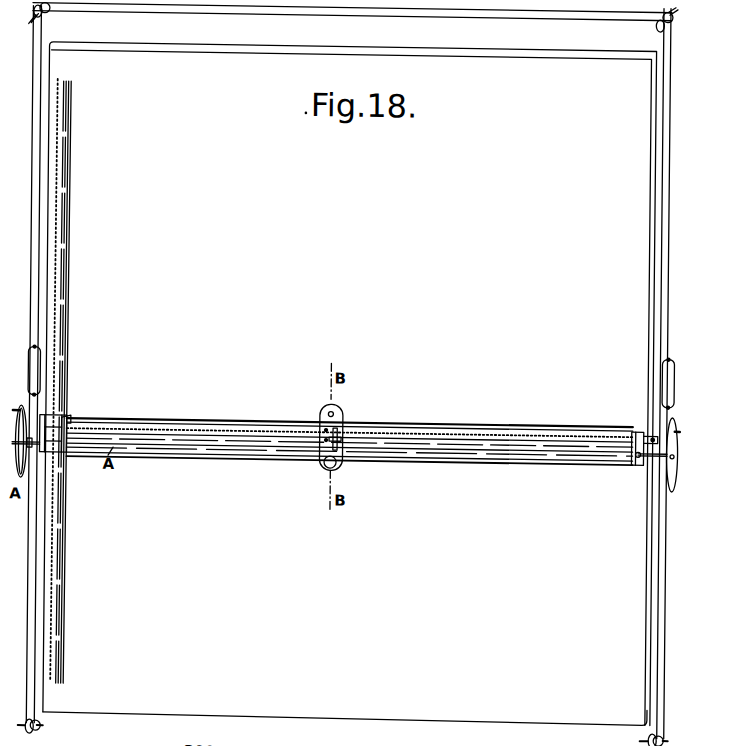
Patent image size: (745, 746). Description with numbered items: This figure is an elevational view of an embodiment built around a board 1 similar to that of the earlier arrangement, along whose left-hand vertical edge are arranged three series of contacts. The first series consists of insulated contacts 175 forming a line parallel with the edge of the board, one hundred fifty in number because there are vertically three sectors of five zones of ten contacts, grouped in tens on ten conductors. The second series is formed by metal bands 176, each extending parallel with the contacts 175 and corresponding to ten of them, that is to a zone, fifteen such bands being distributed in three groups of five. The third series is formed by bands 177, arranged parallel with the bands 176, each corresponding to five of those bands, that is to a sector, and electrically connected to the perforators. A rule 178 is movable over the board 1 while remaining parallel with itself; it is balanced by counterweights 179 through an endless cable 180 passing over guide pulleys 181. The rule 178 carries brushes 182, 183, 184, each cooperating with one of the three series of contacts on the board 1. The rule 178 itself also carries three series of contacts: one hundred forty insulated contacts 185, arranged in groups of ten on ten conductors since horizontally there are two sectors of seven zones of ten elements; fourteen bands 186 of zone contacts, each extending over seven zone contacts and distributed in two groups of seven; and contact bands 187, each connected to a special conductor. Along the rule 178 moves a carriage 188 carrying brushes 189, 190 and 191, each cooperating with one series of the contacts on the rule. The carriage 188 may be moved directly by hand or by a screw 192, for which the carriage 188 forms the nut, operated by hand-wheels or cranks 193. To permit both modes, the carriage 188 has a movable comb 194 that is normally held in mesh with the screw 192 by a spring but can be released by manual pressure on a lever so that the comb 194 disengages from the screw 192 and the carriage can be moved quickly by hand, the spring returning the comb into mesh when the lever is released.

The board 1 is at (124, 51).
The insulated contacts 175 is at (59, 81).
The metal bands 176 is at (66, 99).
The bands 177 is at (71, 132).
The rule 178 is at (608, 449).
The counterweights 179 is at (41, 354).
The endless cable 180 is at (479, 4).
The guide pulleys 181 is at (50, 13).
The brush 182 is at (59, 419).
The brush 183 is at (64, 427).
The brush 184 is at (72, 417).
The insulated contacts 185 is at (174, 422).
The bands of zone contacts 186 is at (216, 427).
The contact band 187 is at (266, 436).
The carriage 188 is at (346, 404).
The brush 189 is at (330, 423).
The brush 190 is at (329, 435).
The brush 191 is at (330, 441).
The screw 192 is at (170, 442).
The hand-wheels or cranks 193 is at (30, 460).
The movable comb 194 is at (350, 452).